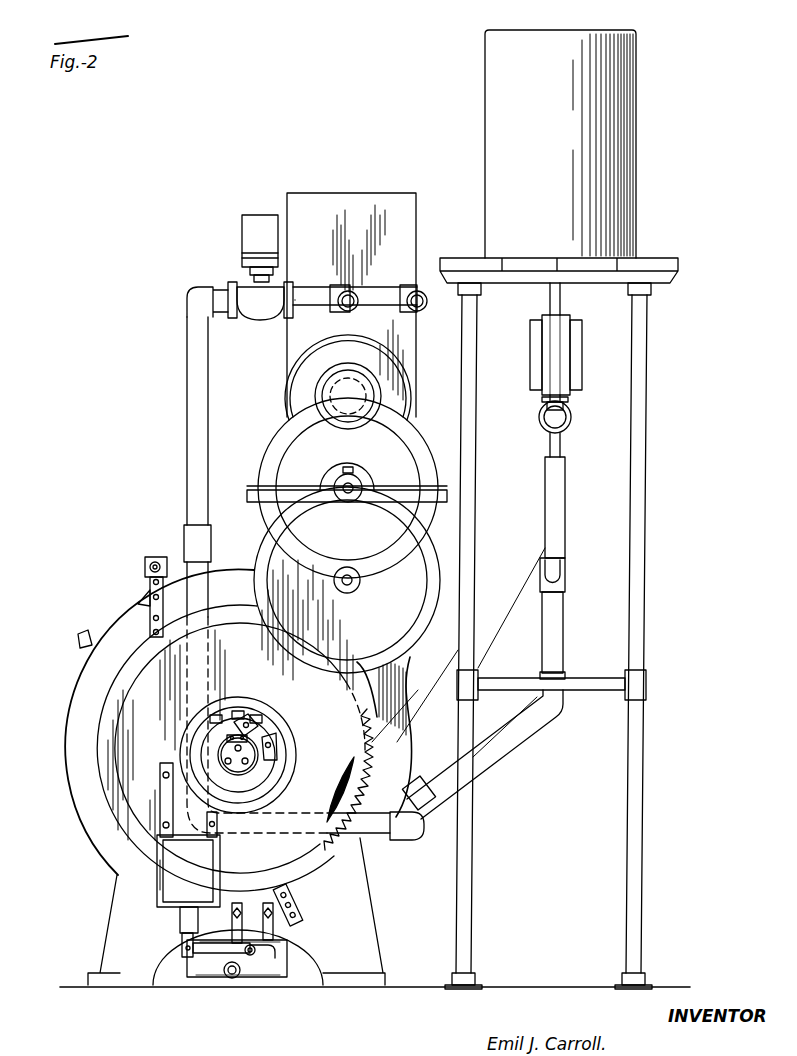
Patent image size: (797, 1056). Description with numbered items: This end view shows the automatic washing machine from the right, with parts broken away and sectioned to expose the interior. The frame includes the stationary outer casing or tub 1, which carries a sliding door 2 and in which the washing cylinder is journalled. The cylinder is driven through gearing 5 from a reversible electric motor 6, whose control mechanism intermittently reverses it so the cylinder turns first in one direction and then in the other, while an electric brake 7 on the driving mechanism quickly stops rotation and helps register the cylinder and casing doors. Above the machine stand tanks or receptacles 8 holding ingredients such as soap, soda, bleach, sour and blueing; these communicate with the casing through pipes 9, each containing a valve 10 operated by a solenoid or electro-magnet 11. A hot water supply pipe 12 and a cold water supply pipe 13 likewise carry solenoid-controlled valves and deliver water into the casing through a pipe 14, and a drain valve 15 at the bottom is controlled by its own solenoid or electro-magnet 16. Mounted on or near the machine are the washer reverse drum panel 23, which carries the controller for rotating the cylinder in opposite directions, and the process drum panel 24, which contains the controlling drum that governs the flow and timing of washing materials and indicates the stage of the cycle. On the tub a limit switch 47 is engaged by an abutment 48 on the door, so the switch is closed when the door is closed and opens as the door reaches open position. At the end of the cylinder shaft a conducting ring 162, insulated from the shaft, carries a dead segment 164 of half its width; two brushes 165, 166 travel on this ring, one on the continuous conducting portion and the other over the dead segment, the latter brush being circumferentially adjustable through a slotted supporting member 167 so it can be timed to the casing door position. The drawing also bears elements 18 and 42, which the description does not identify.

The outer casing or tub 1 is at (85, 790).
The sliding door 2 is at (68, 688).
The gearing 5 is at (383, 400).
The reversible electric motor 6 is at (315, 395).
The electric brake 7 is at (372, 388).
The tanks or receptacles 8 is at (612, 152).
The pipes 9 is at (556, 452).
The valve 10 is at (258, 312).
The solenoid or electro-magnet 11 is at (248, 238).
The hot water supply pipe 12 is at (347, 308).
The cold water supply pipe 13 is at (424, 308).
The pipe 14 is at (200, 585).
The drain valve 15 is at (277, 962).
The solenoid or electro-magnet 16 is at (178, 884).
The lug 18 is at (95, 628).
The washer reverse drum panel 23 is at (392, 287).
The process drum panel 24 is at (373, 210).
The pivot bolt 42 is at (155, 560).
The limit switch 47 is at (148, 588).
The abutment 48 is at (140, 604).
The conducting ring 162 is at (248, 778).
The dead segment 164 is at (260, 757).
The brush 165 is at (279, 752).
The brush 166 is at (262, 722).
The member 167 is at (238, 711).